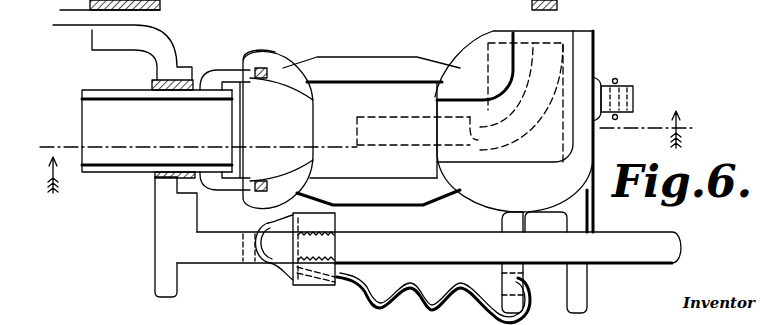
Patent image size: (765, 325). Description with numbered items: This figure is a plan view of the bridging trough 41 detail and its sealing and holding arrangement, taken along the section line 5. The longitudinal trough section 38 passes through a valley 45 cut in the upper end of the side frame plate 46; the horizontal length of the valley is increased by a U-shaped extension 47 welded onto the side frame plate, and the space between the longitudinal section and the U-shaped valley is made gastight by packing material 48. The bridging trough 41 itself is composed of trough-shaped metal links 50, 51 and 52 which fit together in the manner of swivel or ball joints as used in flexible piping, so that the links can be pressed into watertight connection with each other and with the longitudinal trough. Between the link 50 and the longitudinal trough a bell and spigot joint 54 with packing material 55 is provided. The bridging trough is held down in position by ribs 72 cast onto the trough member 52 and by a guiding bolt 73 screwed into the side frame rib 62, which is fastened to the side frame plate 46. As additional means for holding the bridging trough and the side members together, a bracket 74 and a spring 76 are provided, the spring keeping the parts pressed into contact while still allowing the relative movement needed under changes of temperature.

The section line 5- 5 is at (362, 151).
The longitudinal trough section 38 is at (92, 115).
The bridging trough 41 is at (595, 50).
The valley 45 is at (154, 178).
The side frame plate 46 is at (160, 257).
The U-shaped extension 47 is at (188, 71).
The packing material 48 is at (152, 83).
The metal link 50 is at (284, 62).
The metal link 51 is at (390, 62).
The metal link 52 is at (583, 67).
The bell and spigot joint 54 is at (248, 67).
The packing material 55 is at (265, 79).
The side frame rib 62 is at (227, 255).
The rib 72 is at (582, 274).
The guiding bolt 73 is at (671, 248).
The bracket 74 is at (630, 97).
The spring 76 is at (616, 120).